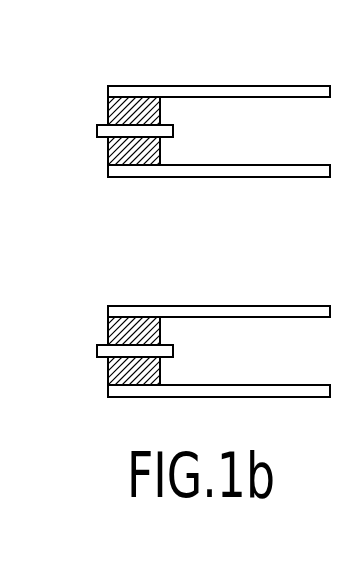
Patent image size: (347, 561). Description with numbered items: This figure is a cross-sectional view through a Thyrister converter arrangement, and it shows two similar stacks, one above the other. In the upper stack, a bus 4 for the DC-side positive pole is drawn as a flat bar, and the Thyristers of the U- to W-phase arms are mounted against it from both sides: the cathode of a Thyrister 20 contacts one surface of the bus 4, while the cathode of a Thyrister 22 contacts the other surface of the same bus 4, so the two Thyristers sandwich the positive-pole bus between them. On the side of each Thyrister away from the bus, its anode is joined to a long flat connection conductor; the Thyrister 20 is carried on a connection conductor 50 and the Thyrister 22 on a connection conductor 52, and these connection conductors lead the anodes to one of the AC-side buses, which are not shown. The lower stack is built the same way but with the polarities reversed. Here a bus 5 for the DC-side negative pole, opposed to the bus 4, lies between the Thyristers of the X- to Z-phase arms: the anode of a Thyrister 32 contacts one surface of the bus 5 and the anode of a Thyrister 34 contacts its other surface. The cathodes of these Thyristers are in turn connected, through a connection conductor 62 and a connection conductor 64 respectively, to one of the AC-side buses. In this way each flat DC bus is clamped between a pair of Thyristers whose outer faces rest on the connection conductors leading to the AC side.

The connection conductor 50 is at (233, 86).
The Thyrister 20 is at (108, 112).
The bus for DC-side positive pole 4 is at (98, 131).
The Thyrister 22 is at (107, 150).
The connection conductor 52 is at (233, 164).
The connection conductor 62 is at (233, 306).
The Thyrister 32 is at (108, 332).
The bus for DC-side negative pole 5 is at (98, 351).
The Thyrister 34 is at (107, 370).
The connection conductor 64 is at (233, 384).